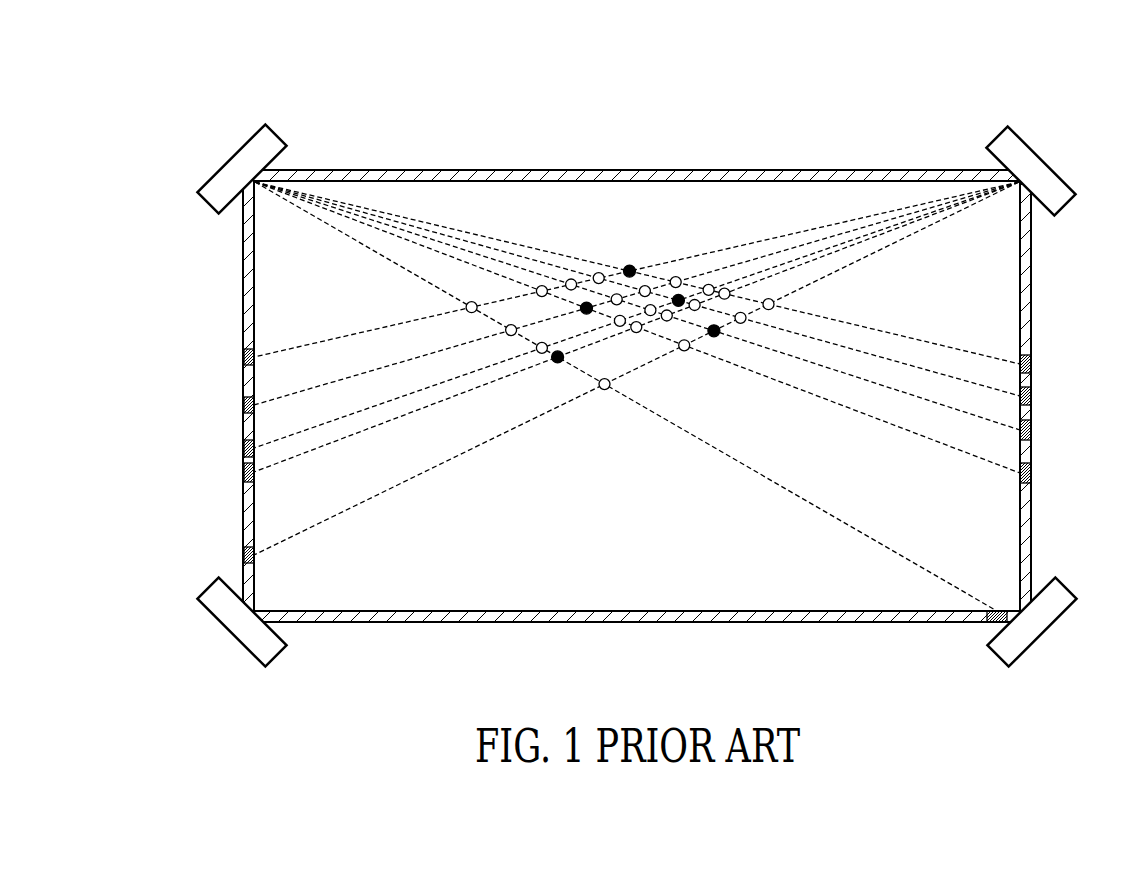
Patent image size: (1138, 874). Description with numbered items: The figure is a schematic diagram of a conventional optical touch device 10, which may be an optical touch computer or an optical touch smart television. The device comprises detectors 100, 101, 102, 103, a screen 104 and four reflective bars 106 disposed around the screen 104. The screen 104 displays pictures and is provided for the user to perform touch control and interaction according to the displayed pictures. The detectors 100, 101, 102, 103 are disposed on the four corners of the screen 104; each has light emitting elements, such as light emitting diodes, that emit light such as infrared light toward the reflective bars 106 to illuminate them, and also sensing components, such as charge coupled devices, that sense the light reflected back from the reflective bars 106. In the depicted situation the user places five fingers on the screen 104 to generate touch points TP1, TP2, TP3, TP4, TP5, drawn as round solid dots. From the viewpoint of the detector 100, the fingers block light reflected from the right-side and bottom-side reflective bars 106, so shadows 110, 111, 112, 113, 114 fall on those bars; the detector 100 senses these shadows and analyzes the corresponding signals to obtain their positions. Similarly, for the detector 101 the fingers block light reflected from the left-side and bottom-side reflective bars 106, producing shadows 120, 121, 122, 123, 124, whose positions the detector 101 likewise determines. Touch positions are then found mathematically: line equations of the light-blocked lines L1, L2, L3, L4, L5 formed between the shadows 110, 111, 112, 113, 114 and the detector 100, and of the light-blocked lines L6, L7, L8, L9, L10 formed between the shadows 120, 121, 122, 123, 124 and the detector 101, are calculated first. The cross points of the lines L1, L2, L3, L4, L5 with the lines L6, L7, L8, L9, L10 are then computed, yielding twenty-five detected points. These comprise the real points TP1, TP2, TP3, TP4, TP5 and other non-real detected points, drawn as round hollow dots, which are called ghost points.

The optical touch device 10 is at (950, 65).
The detector 100 is at (227, 160).
The detector 101 is at (1048, 160).
The detector 102 is at (1047, 635).
The detector 103 is at (227, 635).
The screen 104 is at (760, 171).
The reflective bar 106 is at (1032, 283).
The shadow 110 is at (1032, 364).
The shadow 111 is at (1032, 396).
The shadow 112 is at (1032, 430).
The shadow 113 is at (1032, 473).
The shadow 114 is at (990, 623).
The shadow 120 is at (243, 357).
The shadow 121 is at (243, 405).
The shadow 122 is at (243, 449).
The shadow 123 is at (243, 474).
The shadow 124 is at (243, 555).
The light-blocked line L1 is at (932, 342).
The light-blocked line L2 is at (887, 358).
The light-blocked line L3 is at (852, 377).
The light-blocked line L4 is at (905, 430).
The light-blocked line L5 is at (827, 513).
The light-blocked line L6 is at (310, 345).
The light-blocked line L7 is at (372, 370).
The light-blocked line L8 is at (402, 398).
The light-blocked line L9 is at (322, 447).
The light-blocked line L10 is at (397, 483).
The touch point TP1 is at (559, 363).
The touch point TP2 is at (587, 302).
The touch point TP3 is at (630, 265).
The touch point TP4 is at (680, 294).
The touch point TP5 is at (714, 337).